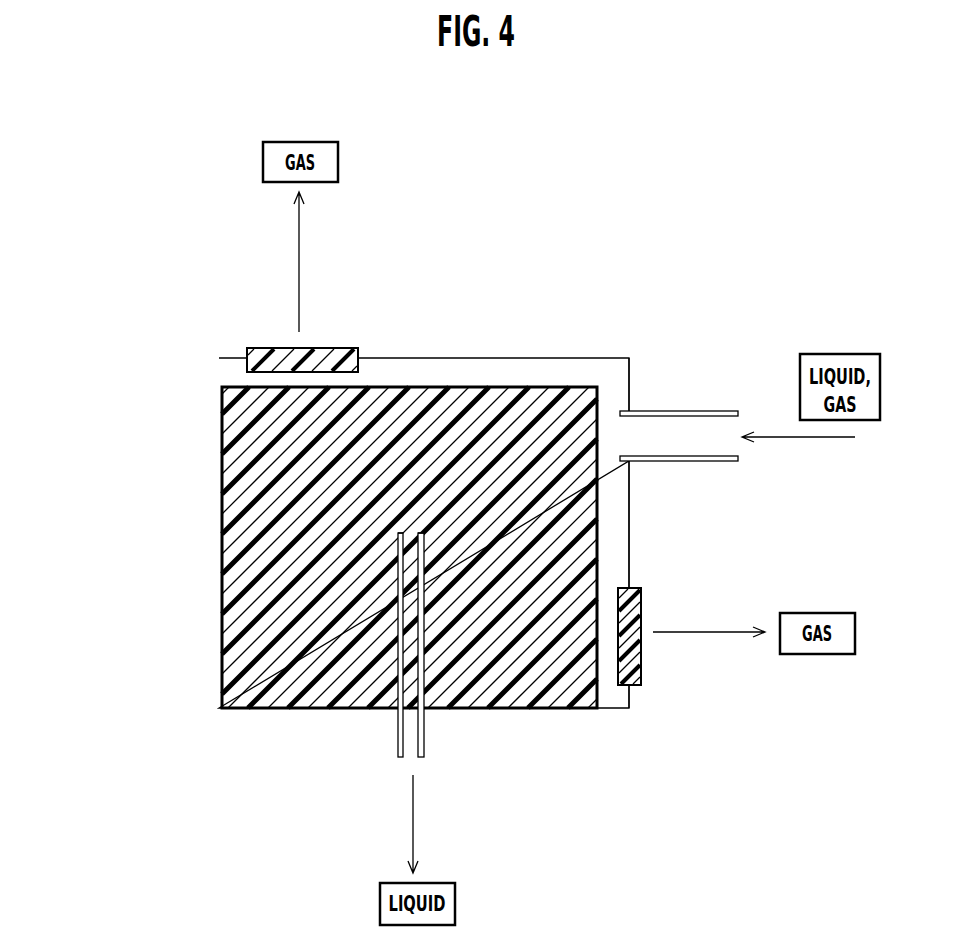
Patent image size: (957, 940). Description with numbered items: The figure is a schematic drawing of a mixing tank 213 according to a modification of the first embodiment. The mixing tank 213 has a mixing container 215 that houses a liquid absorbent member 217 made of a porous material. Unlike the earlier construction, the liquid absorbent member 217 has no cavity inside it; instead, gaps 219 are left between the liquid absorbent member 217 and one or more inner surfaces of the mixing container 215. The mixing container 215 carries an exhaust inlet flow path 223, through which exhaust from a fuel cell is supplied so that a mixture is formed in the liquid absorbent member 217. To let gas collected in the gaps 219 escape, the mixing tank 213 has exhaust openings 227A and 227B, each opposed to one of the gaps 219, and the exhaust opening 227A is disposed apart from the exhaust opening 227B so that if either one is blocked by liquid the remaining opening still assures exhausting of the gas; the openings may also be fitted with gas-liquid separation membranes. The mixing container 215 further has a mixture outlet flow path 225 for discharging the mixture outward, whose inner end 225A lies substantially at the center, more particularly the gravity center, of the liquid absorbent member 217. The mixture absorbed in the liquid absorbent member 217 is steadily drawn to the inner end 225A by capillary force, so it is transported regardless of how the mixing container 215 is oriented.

The mixing tank 213 is at (197, 588).
The mixing container 215 is at (221, 655).
The liquid absorbent member 217 is at (282, 472).
The gaps 219 is at (607, 527).
The exhaust inlet flow path 223 is at (690, 411).
The mixture outlet flow path 225 is at (424, 727).
The inner end 225A is at (408, 533).
The exhaust opening 227A is at (262, 350).
The exhaust opening 227B is at (641, 658).